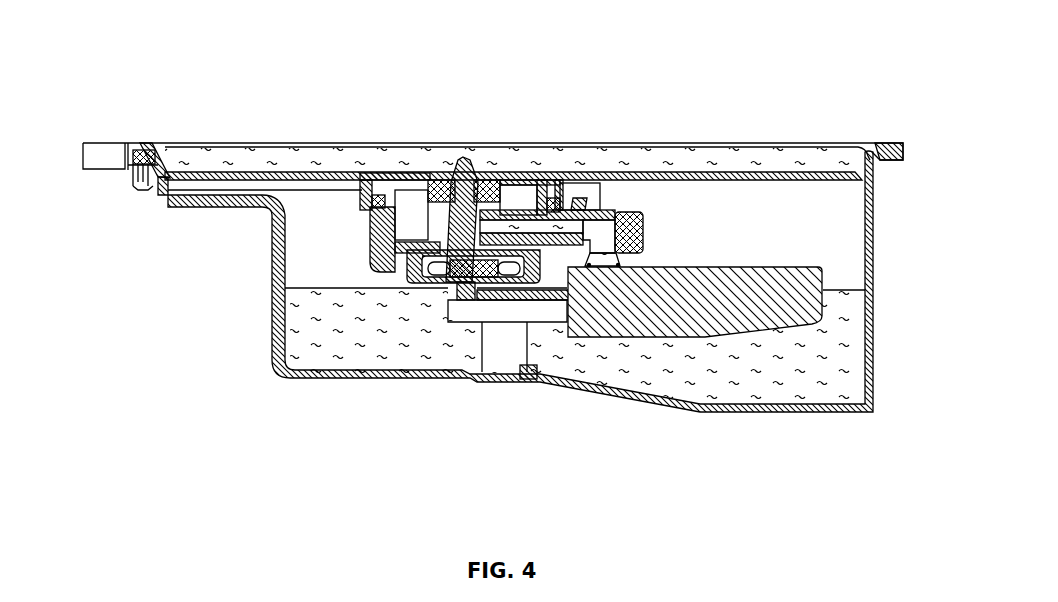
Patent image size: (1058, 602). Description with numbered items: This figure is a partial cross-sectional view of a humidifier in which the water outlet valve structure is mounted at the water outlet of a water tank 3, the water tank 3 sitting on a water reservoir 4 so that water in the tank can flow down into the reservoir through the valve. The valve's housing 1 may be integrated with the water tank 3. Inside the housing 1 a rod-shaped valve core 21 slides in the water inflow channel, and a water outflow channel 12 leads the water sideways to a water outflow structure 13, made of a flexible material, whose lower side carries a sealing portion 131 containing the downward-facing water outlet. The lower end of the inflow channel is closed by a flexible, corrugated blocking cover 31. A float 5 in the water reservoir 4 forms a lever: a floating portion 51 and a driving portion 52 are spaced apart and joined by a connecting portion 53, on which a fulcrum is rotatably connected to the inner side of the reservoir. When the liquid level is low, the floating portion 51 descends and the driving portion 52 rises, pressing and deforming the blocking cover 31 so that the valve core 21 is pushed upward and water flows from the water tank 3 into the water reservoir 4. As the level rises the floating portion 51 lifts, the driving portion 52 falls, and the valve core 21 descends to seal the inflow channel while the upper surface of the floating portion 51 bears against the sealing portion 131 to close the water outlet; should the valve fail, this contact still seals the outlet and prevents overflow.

The housing 1 is at (407, 213).
The water tank 3 is at (828, 152).
The water reservoir 4 is at (752, 372).
The float 5 is at (716, 290).
The floating portion 51 is at (522, 295).
The water outflow channel 12 is at (537, 225).
The water outflow structure 13 is at (633, 212).
The valve core 21 is at (465, 155).
The blocking cover 31 is at (445, 273).
The driving portion 52 is at (456, 284).
The connecting portion 53 is at (522, 302).
The sealing portion 131 is at (605, 262).